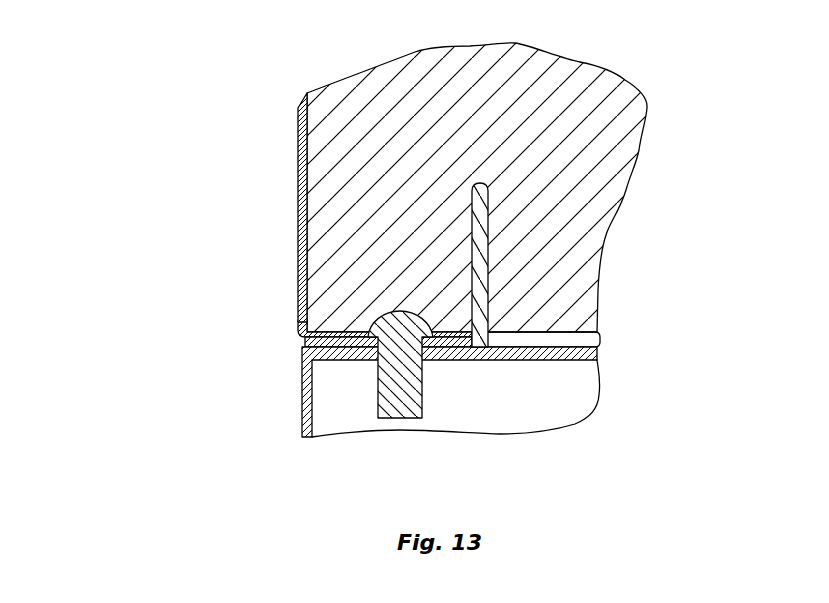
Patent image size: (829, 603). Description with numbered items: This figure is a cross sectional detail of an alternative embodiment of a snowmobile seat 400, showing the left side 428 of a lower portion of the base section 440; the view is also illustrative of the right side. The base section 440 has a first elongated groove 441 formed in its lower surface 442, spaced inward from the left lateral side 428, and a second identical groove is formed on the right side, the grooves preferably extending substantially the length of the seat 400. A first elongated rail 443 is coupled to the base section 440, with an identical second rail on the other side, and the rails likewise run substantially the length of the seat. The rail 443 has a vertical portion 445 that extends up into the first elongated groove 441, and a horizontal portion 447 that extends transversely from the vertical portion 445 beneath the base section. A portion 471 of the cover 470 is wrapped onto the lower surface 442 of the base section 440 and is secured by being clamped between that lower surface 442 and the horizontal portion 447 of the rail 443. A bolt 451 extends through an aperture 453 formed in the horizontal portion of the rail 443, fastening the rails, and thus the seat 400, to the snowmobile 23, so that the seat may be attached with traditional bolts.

The seat 400 is at (119, 92).
The left side 428 is at (320, 99).
The base section 440 is at (623, 118).
The first elongated groove 441 is at (490, 202).
The lower surface 442 is at (570, 327).
The first elongated rail 443 is at (480, 252).
The vertical portion 445 is at (472, 228).
The horizontal portion 447 is at (457, 342).
The bolt 451 is at (393, 407).
The aperture 453 is at (303, 393).
The cover 470 is at (298, 148).
The portion of the cover 471 is at (333, 363).
The snowmobile 23 is at (508, 360).